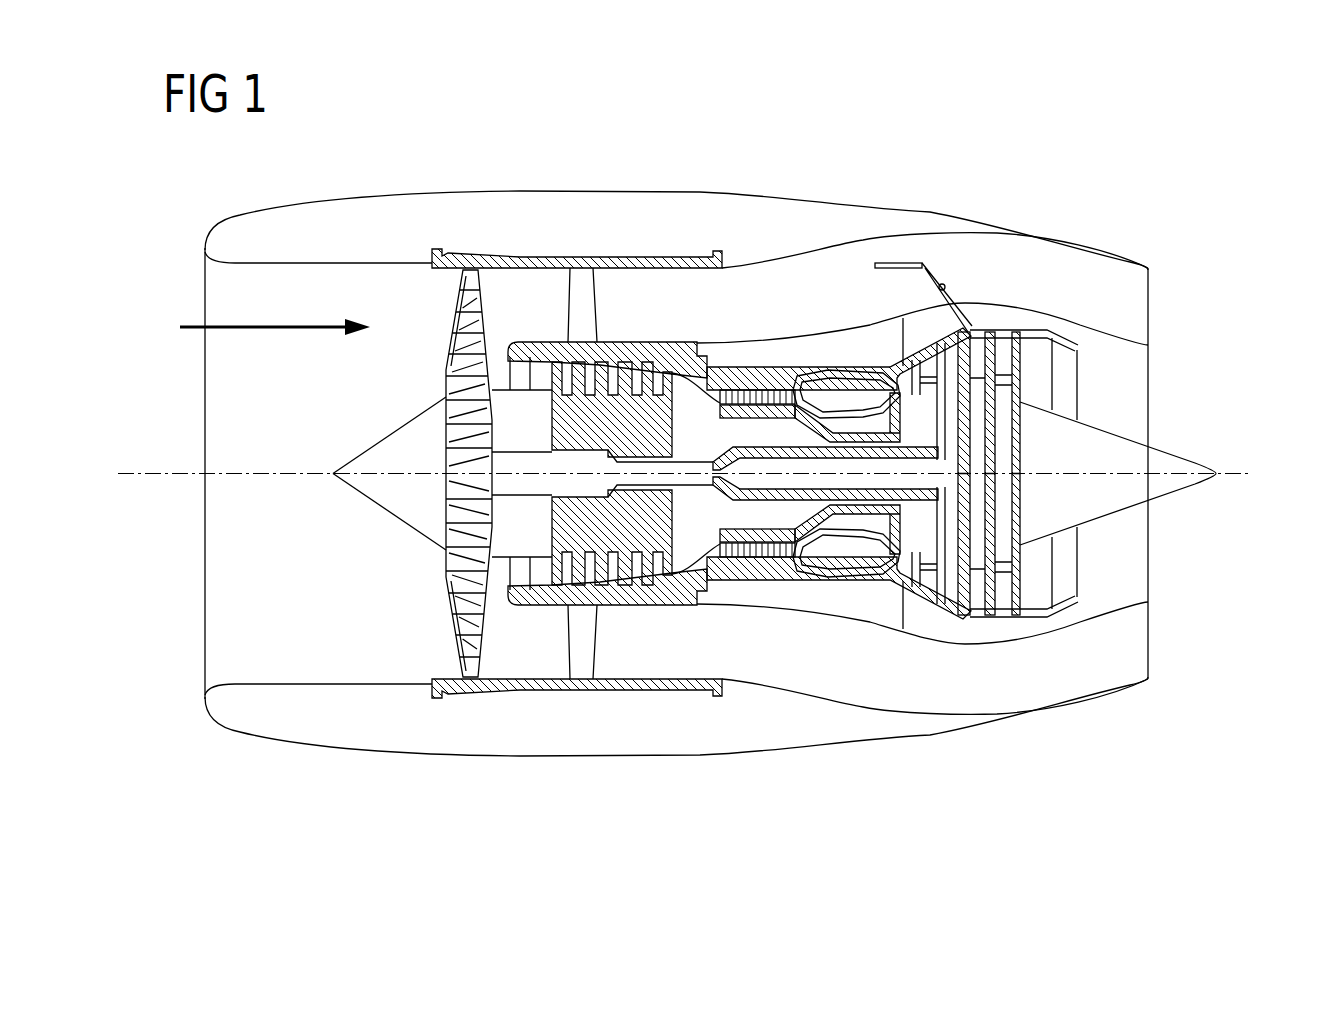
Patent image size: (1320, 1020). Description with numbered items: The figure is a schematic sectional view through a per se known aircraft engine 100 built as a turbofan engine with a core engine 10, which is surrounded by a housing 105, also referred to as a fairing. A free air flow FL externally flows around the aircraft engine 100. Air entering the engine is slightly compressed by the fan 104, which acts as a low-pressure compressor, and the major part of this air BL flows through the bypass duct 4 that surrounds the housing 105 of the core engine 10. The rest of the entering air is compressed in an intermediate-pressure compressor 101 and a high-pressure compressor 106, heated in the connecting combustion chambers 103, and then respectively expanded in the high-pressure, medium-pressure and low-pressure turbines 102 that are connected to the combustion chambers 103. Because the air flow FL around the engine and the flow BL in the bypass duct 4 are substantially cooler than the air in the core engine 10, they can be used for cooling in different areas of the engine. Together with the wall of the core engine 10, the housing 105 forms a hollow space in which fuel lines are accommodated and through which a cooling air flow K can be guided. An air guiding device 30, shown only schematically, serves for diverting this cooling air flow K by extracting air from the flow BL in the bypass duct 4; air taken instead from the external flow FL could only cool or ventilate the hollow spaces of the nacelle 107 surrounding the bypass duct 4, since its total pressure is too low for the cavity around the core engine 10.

The aircraft engine 100 is at (1138, 238).
The intermediate-pressure compressor 101 is at (632, 580).
The high-pressure, medium-pressure and low-pressure turbines 102 is at (978, 368).
The combustion chambers 103 is at (850, 557).
The fan 104 is at (468, 668).
The housing 105 is at (793, 340).
The high-pressure compressor 106 is at (750, 552).
The nacelle 107 is at (672, 240).
The core engine 10 is at (822, 596).
The air guiding device 30 is at (938, 258).
The bypass duct 4 is at (740, 305).
The cooling air flow K is at (922, 314).
The air flow in the bypass duct BL is at (598, 307).
The free air flow FL is at (560, 138).